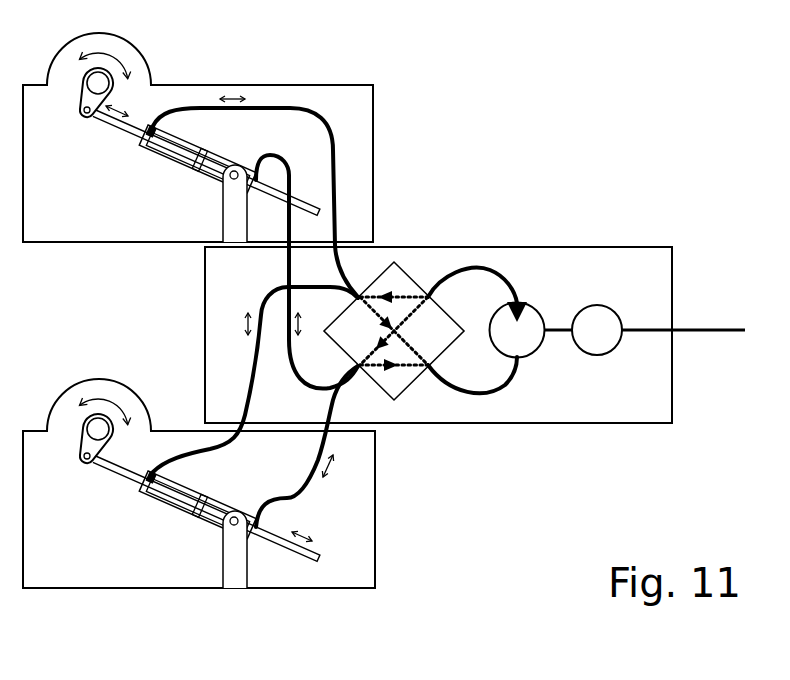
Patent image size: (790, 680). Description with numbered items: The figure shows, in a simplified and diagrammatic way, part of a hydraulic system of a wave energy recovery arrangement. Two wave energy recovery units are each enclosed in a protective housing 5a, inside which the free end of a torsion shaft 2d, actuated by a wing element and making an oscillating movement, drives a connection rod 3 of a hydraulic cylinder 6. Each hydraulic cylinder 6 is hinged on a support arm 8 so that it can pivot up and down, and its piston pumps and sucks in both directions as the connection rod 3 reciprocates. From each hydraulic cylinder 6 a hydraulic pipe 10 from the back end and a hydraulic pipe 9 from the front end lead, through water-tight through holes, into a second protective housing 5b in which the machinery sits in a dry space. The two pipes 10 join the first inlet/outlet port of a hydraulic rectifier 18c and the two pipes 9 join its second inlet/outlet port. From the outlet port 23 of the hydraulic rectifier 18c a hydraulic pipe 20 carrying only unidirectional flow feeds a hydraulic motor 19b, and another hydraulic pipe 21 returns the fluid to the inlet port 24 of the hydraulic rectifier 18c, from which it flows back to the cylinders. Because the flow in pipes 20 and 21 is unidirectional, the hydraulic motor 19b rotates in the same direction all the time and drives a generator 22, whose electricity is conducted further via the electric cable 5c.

The protective housing 5a is at (196, 85).
The second protective housing 5b is at (606, 247).
The electric cable 5c is at (696, 329).
The torsion shaft 2d is at (78, 77).
The connection rod 3 is at (120, 133).
The hydraulic cylinder 6 is at (182, 140).
The support arm 8 is at (224, 210).
The hydraulic pipe 9 is at (293, 108).
The hydraulic pipe 10 is at (270, 160).
The hydraulic rectifier 18c is at (394, 262).
The hydraulic pipe 20 is at (500, 271).
The hydraulic pipe 21 is at (480, 394).
The outlet port 23 is at (429, 296).
The inlet port 24 is at (423, 372).
The hydraulic motor 19b is at (531, 344).
The generator 22 is at (590, 307).